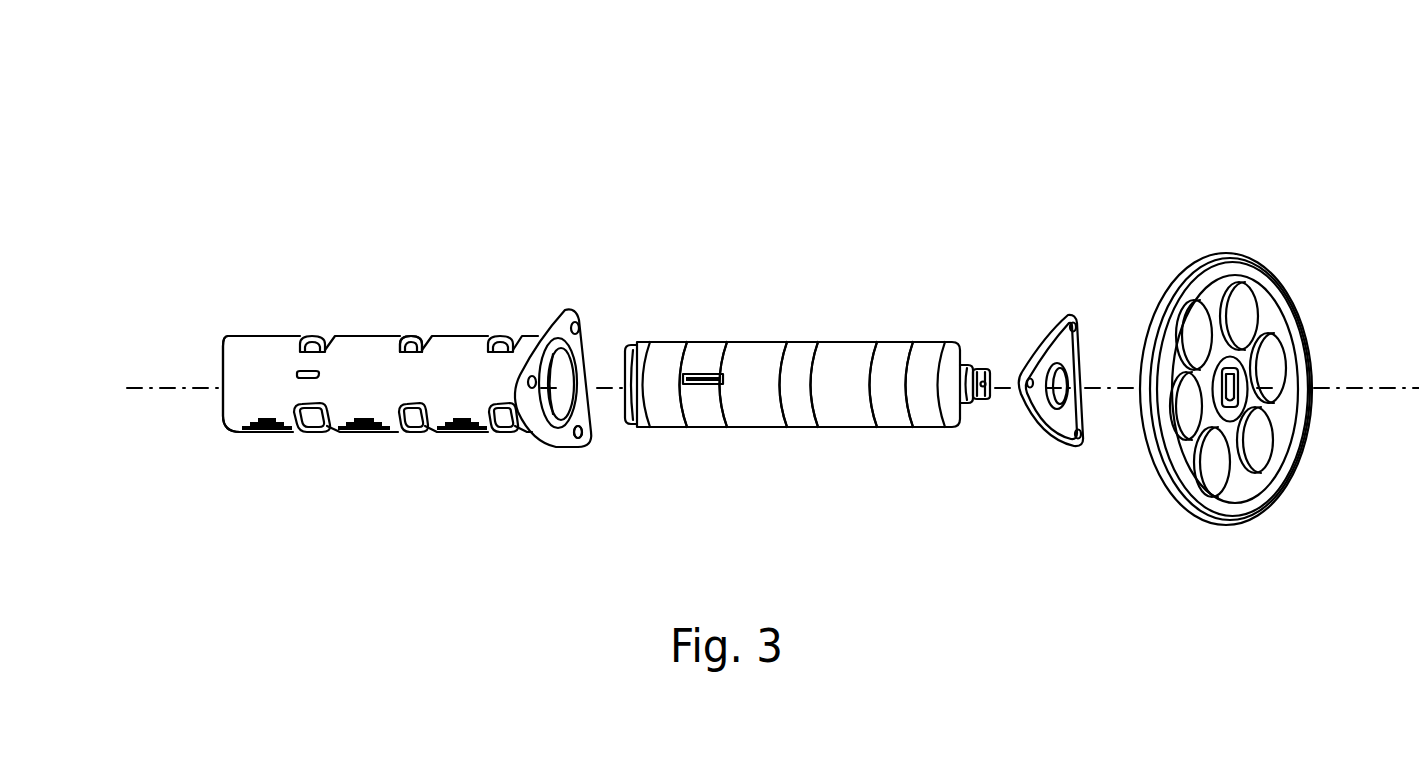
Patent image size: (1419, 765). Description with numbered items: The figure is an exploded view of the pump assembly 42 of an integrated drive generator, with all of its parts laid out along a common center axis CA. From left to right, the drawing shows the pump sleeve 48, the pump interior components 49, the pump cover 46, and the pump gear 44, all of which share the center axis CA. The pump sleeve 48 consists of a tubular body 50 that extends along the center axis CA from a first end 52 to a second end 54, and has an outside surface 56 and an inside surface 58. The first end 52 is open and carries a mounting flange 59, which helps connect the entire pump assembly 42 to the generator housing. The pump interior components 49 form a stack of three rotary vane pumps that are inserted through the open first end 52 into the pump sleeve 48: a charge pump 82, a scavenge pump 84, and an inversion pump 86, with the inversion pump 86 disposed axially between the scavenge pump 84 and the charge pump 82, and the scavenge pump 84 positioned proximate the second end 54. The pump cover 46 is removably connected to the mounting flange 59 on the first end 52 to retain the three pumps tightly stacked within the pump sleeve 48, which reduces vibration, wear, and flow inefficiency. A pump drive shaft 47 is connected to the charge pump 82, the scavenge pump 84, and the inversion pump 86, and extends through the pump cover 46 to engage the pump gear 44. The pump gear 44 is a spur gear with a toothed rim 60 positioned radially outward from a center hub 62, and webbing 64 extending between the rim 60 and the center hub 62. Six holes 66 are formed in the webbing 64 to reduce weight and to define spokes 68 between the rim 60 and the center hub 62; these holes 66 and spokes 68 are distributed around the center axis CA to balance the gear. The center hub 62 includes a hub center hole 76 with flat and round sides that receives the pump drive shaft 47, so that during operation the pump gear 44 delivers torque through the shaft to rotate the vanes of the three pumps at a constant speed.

The center axis CA is at (168, 387).
The pump assembly 42 is at (297, 152).
The pump gear 44 is at (1213, 220).
The pump cover 46 is at (1053, 314).
The pump drive shaft 47 is at (978, 370).
The pump sleeve 48 is at (592, 505).
The pump interior components 49 is at (972, 435).
The tubular body 50 is at (358, 363).
The first end 52 is at (543, 340).
The second end 54 is at (223, 362).
The outside surface 56 is at (452, 362).
The inside surface 58 is at (551, 382).
The mounting flange 59 is at (566, 437).
The rim 60 is at (1258, 282).
The center hub 62 is at (1227, 362).
The webbing 64 is at (1265, 320).
The plurality of holes 66 is at (1253, 430).
The spokes 68 is at (1233, 463).
The hub center hole 76 is at (1232, 382).
The charge pump 82 is at (890, 370).
The scavenge pump 84 is at (708, 360).
The inversion pump 86 is at (802, 368).